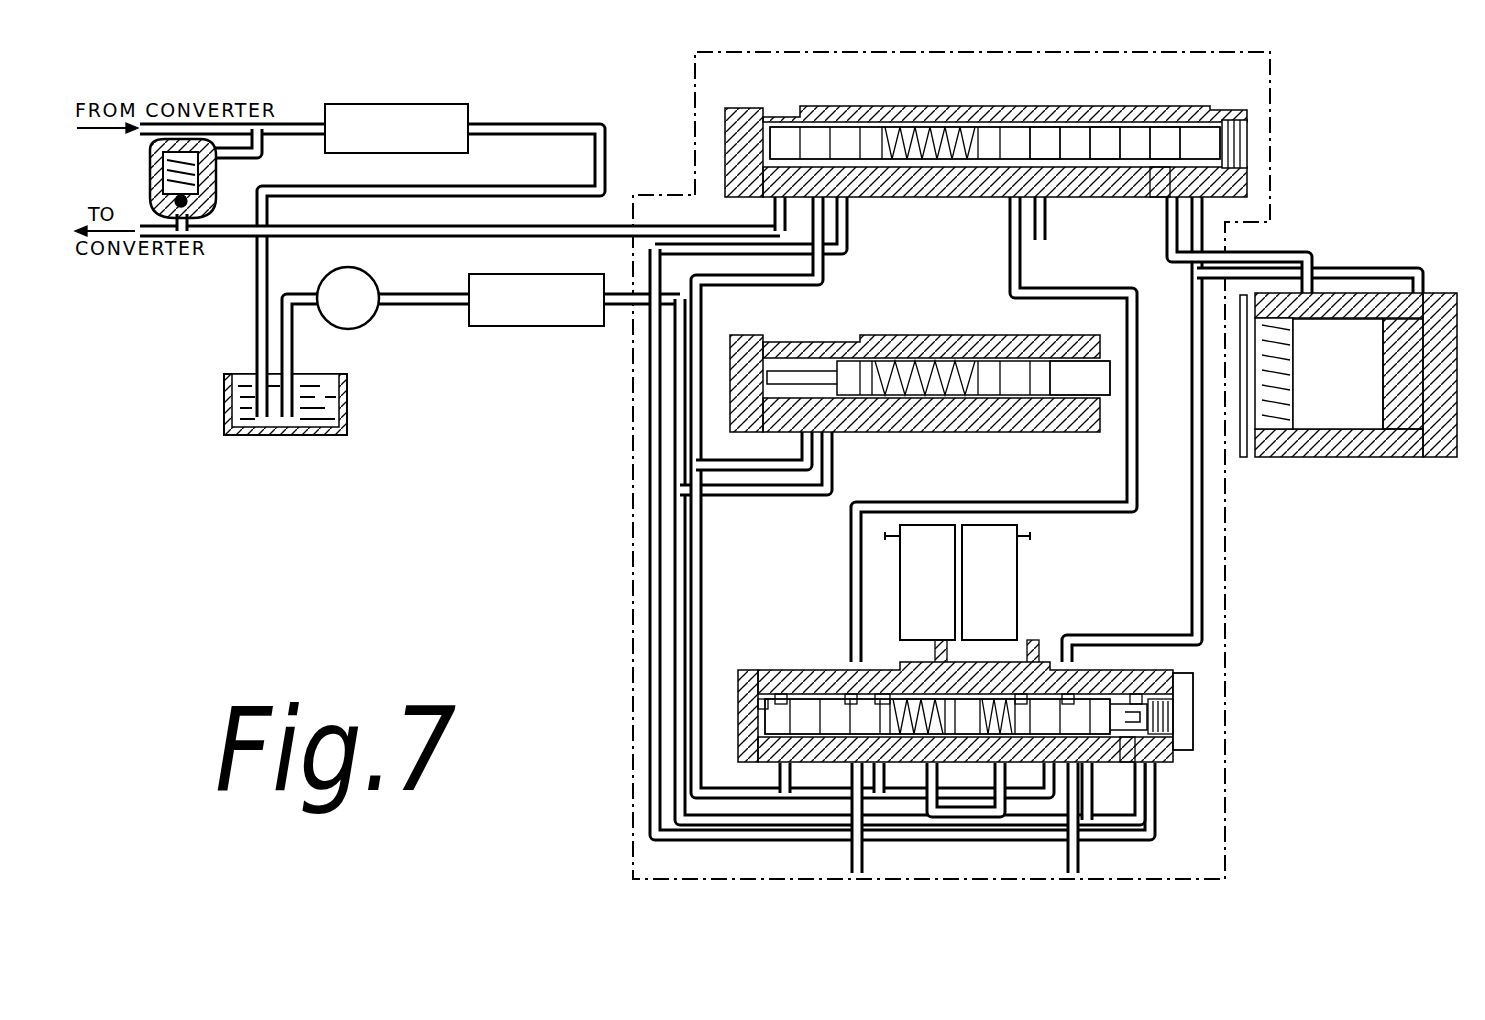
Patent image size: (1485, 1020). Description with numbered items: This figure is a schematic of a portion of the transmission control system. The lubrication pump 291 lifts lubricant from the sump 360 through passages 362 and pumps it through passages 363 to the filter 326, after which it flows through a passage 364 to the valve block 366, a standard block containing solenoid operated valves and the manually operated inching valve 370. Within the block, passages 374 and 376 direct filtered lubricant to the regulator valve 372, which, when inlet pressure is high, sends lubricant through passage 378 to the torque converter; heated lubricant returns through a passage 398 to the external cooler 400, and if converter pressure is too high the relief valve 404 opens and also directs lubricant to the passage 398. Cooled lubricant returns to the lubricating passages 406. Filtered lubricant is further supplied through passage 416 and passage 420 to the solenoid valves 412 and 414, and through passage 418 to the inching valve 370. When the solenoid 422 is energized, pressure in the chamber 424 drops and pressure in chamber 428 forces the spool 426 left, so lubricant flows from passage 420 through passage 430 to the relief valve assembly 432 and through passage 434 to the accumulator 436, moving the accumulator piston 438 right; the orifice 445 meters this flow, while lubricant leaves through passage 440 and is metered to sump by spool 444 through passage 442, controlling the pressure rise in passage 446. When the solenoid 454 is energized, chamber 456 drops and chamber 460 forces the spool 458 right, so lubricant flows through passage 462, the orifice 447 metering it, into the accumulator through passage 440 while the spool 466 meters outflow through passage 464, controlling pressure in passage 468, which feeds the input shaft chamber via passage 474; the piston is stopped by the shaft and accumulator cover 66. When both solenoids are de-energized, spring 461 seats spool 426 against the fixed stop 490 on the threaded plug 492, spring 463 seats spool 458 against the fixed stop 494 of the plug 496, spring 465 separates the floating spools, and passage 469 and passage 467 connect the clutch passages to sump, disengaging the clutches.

The shaft and accumulator cover 66 is at (1244, 458).
The lubrication pump 291 is at (346, 270).
The filter 326 is at (482, 328).
The sump 360 is at (242, 438).
The passages 362 is at (289, 348).
The passages 363 is at (418, 293).
The passage 364 is at (617, 304).
The valve block 366 is at (631, 556).
The inching valve 370 is at (958, 326).
The regulator valve 372 is at (821, 96).
The passage 374 is at (778, 238).
The passage 376 is at (850, 251).
The passage 378 is at (566, 226).
The passage 398 is at (312, 124).
The external cooler 400 is at (471, 108).
The relief valve 404 is at (215, 194).
The lubricating passages 406 is at (597, 125).
The solenoid valve 412 is at (775, 655).
The solenoid valve 414 is at (1077, 622).
The passage 416 is at (722, 841).
The passage 418 is at (792, 287).
The passage 420 is at (687, 530).
The solenoid 422 is at (1003, 558).
The chamber 424 is at (1027, 666).
The spool 426 is at (1106, 791).
The chamber 428 is at (1137, 670).
The passage 430 is at (1204, 543).
The relief valve assembly 432 is at (1138, 84).
The passage 434 is at (1302, 249).
The accumulator 436 is at (1365, 452).
The accumulator piston 438 is at (1406, 428).
The passage 440 is at (1392, 266).
The passage 442 is at (1052, 200).
The spool 444 is at (1042, 128).
The orifice 445 is at (1088, 660).
The passage 446 is at (1080, 857).
The orifice 447 is at (851, 692).
The solenoid 454 is at (929, 522).
The chamber 456 is at (882, 692).
The spool 458 is at (770, 745).
The chamber 460 is at (781, 692).
The spring 461 is at (1012, 768).
The passage 462 is at (1055, 500).
The spring 463 is at (966, 786).
The passage 464 is at (1160, 186).
The spring 465 is at (1098, 128).
The spool 466 is at (1150, 128).
The passage 467 is at (1126, 760).
The passage 468 is at (864, 857).
The passage 469 is at (832, 766).
The passage 474 is at (1095, 372).
The fixed stop 490 is at (1185, 690).
The threaded plug 492 is at (1195, 714).
The fixed stop 494 is at (762, 700).
The plug 496 is at (762, 712).